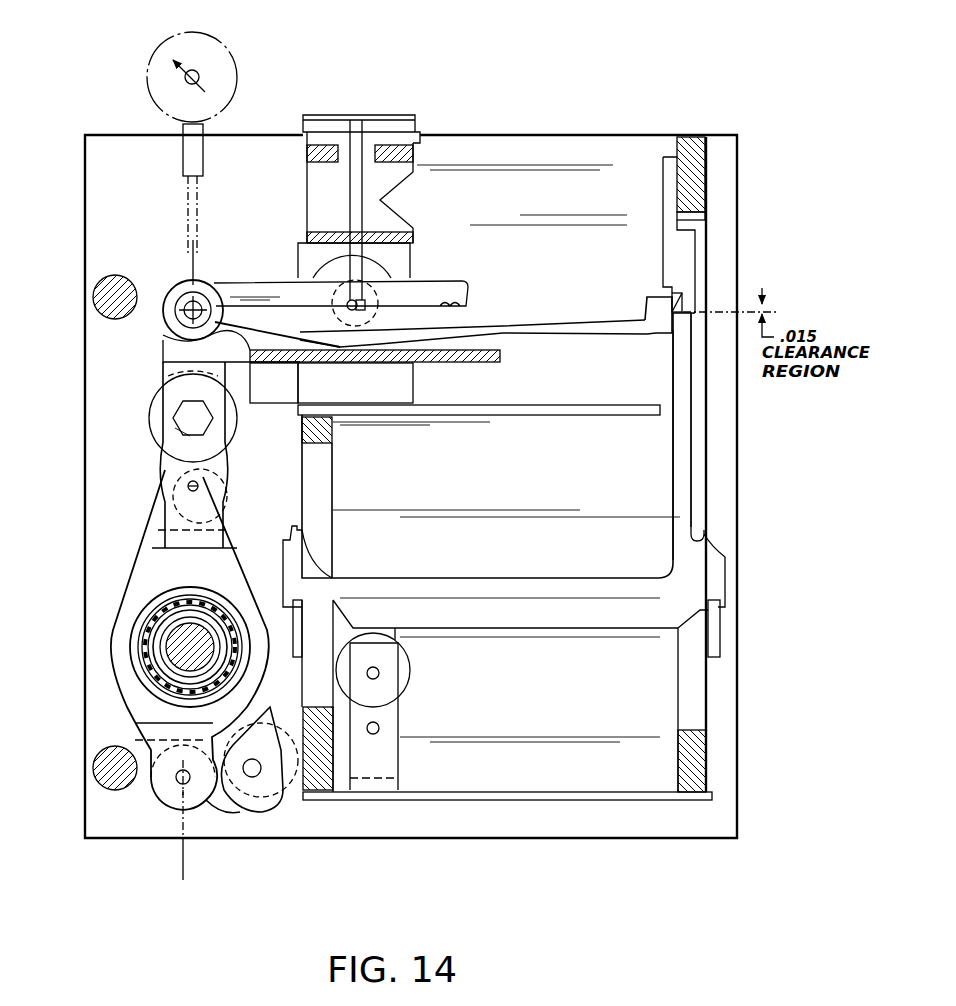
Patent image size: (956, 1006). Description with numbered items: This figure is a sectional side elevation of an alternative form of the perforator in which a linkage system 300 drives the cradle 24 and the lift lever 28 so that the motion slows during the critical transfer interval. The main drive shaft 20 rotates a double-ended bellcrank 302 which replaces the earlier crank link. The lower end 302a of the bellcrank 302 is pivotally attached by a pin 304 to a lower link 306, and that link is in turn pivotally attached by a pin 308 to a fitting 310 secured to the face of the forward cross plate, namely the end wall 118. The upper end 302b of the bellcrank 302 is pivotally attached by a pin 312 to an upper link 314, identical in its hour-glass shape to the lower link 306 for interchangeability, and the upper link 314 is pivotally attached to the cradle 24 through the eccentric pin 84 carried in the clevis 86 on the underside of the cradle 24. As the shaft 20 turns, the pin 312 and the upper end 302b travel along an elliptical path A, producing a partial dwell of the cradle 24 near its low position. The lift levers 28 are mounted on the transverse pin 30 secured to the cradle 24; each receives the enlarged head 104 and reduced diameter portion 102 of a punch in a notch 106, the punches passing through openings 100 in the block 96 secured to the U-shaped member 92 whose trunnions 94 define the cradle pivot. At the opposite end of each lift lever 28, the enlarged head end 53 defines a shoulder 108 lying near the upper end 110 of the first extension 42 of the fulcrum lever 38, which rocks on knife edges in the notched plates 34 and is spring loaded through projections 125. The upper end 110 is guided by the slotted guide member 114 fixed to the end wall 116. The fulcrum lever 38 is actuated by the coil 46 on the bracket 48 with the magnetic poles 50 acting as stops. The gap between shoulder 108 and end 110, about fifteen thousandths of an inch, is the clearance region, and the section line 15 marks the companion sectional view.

The section line 15- 15 is at (188, 255).
The shaft 20 is at (172, 646).
The cradle 24 is at (242, 339).
The lift levers 28 is at (550, 323).
The transverse pin 30 is at (190, 313).
The plates 34 is at (720, 644).
The fulcrum lever 38 is at (487, 445).
The first extension 42 is at (683, 447).
The coil 46 is at (381, 728).
The bracket 48 is at (380, 699).
The magnetic poles 50 is at (381, 672).
The enlarged head end 53 is at (676, 303).
The eccentric pin 84 is at (176, 424).
The clevis 86 is at (172, 403).
The U-shaped member 92 is at (403, 255).
The support trunnions 94 is at (378, 298).
The block 96 is at (312, 167).
The openings 100 is at (355, 153).
The reduced diameter portion 102 is at (328, 287).
The enlarged head 104 is at (363, 309).
The notch 106 is at (343, 308).
The shoulder 108 is at (665, 332).
The upper end 110 is at (682, 322).
The slotted guide member 114 is at (672, 168).
The end wall 116 is at (700, 197).
The end wall 118 is at (320, 775).
The projections 125 is at (306, 536).
The linkage system 300 is at (133, 543).
The bellcrank 302 is at (133, 603).
The lower end 302a is at (150, 740).
The upper end 302b is at (158, 521).
The pin 304 is at (177, 781).
The lower link 306 is at (214, 800).
The pin 308 is at (252, 778).
The fitting 310 is at (272, 783).
The pin 312 is at (186, 493).
The upper link 314 is at (166, 462).
The elliptical path A is at (210, 486).